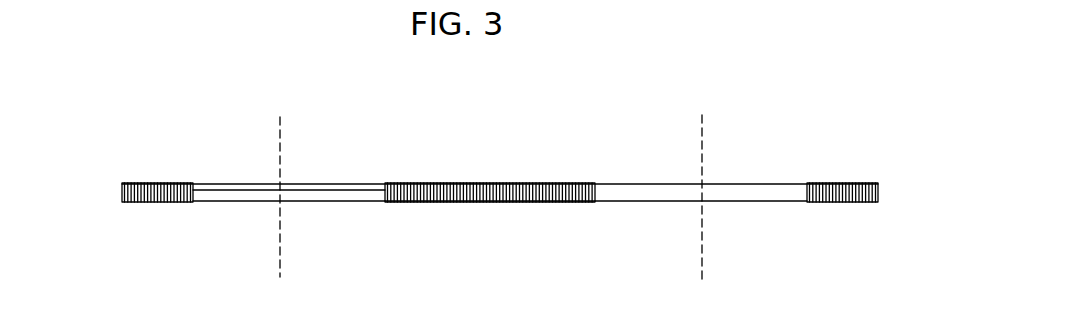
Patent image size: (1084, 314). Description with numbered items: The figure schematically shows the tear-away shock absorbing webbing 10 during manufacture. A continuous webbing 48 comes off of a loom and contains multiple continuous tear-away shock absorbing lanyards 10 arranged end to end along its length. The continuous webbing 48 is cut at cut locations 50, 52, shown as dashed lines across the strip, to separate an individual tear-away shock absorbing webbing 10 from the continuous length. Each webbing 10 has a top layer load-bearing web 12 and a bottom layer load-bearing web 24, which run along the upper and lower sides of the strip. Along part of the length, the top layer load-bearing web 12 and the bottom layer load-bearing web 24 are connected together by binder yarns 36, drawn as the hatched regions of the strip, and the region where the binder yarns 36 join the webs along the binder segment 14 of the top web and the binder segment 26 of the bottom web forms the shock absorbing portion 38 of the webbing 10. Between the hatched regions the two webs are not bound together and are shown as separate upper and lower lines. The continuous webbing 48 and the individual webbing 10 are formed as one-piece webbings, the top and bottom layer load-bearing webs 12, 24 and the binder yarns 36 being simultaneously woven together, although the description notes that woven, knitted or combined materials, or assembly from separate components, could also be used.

The tear-away shock absorbing webbing 10 is at (496, 174).
The top layer load-bearing web 12 is at (208, 187).
The binder segment 14 is at (432, 180).
The bottom layer load-bearing web 24 is at (245, 203).
The binder segment 26 is at (488, 200).
The binder yarns 36 is at (122, 192).
The shock absorbing portion 38 is at (124, 224).
The continuous webbing 48 is at (133, 103).
The cut location 50 is at (280, 180).
The cut location 52 is at (703, 182).